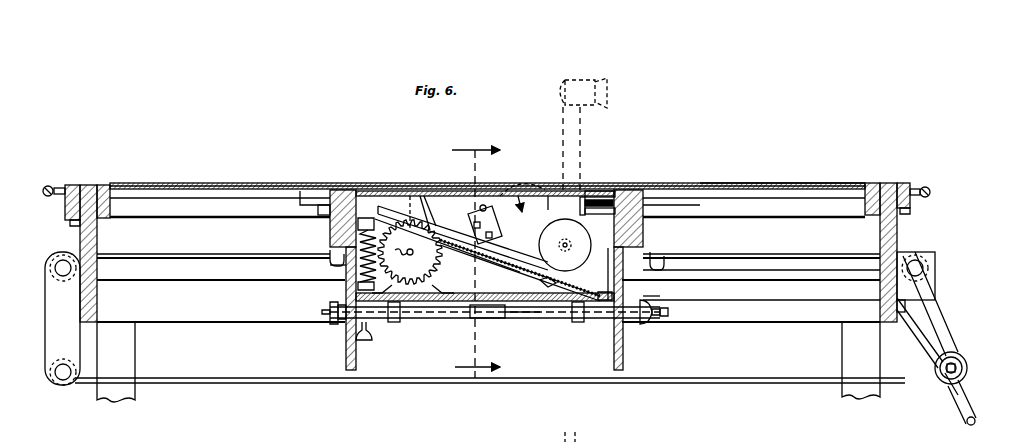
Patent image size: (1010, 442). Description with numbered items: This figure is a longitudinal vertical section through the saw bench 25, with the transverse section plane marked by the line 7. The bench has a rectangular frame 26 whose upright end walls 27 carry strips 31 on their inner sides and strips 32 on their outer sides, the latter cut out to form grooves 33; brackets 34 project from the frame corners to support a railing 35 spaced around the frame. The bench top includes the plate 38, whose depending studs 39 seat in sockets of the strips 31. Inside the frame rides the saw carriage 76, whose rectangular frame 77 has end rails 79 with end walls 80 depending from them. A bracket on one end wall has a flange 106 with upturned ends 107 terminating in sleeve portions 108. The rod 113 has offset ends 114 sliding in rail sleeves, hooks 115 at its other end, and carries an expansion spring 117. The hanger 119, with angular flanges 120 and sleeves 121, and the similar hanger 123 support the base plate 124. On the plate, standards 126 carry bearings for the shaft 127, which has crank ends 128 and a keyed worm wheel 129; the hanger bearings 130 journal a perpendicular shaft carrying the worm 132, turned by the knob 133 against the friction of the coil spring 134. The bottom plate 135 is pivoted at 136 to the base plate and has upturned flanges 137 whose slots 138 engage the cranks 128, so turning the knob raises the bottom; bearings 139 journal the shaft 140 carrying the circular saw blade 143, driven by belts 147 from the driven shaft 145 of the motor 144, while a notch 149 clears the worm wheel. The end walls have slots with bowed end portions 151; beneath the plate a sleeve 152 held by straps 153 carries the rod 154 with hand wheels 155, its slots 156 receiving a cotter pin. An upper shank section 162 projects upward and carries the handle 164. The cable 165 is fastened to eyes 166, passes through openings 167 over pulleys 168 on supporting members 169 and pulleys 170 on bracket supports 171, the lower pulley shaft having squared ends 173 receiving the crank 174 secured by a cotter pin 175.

The section line 7— 7 is at (468, 258).
The saw bench 25 is at (762, 184).
The frame 26 is at (806, 184).
The end walls 27 is at (100, 302).
The strips 31 is at (105, 220).
The strips 32 is at (58, 207).
The grooves 33 is at (75, 222).
The brackets 34 is at (58, 185).
The railing 35 is at (45, 186).
The top plate 38 is at (195, 183).
The depending studs 39 is at (135, 182).
The saw carriage 76 is at (520, 192).
The carriage frame 77 is at (665, 212).
The end rails 79 is at (302, 185).
The end walls 80 is at (345, 355).
The flange 106 is at (590, 210).
The upturned ends 107 is at (595, 192).
The sleeve portions 108 is at (600, 197).
The rod 113 is at (550, 192).
The offset ends 114 is at (598, 190).
The hooks 115 is at (328, 188).
The springs 117 is at (392, 192).
The hanger 119 is at (660, 295).
The angular flanges 120 is at (372, 192).
The sleeves 121 is at (606, 196).
The hanger 123 is at (348, 294).
The base plate 124 is at (560, 286).
The standards 126 is at (472, 270).
The shaft 127 is at (386, 254).
The crank ends 128 is at (424, 192).
The worm wheel 129 is at (410, 252).
The bearings 130 is at (330, 232).
The worm 132 is at (340, 268).
The knob 133 is at (372, 345).
The coil spring 134 is at (338, 325).
The bottom plate 135 is at (530, 282).
The pivot 136 is at (612, 300).
The upturned flanges 137 is at (420, 192).
The slots 138 is at (410, 192).
The bearings 139 is at (470, 190).
The shaft 140 is at (505, 192).
The circular saw blade 143 is at (512, 168).
The motor 144 is at (571, 256).
The driven shaft 145 is at (565, 250).
The belts 147 is at (542, 226).
The notch 149 is at (497, 272).
The bowed end portions 151 is at (505, 318).
The sleeve 152 is at (440, 320).
The strap members 153 is at (395, 322).
The rod 154 is at (300, 325).
The hand wheels 155 is at (330, 305).
The slots 156 is at (530, 322).
The upper shank section 162 is at (580, 150).
The handle 164 is at (610, 88).
The cable 165 is at (175, 258).
The eyes 166 is at (325, 252).
The openings 167 is at (100, 268).
The pulleys 168 is at (55, 365).
The supporting members 169 is at (75, 335).
The pulleys 170 is at (936, 262).
The bracket supports 171 is at (910, 340).
The squared ends 173 is at (940, 388).
The crank 174 is at (958, 410).
The cotter pin 175 is at (962, 355).